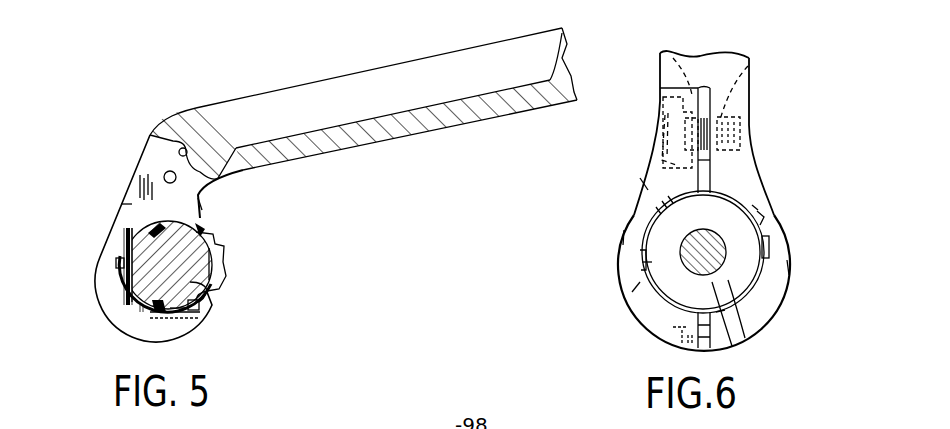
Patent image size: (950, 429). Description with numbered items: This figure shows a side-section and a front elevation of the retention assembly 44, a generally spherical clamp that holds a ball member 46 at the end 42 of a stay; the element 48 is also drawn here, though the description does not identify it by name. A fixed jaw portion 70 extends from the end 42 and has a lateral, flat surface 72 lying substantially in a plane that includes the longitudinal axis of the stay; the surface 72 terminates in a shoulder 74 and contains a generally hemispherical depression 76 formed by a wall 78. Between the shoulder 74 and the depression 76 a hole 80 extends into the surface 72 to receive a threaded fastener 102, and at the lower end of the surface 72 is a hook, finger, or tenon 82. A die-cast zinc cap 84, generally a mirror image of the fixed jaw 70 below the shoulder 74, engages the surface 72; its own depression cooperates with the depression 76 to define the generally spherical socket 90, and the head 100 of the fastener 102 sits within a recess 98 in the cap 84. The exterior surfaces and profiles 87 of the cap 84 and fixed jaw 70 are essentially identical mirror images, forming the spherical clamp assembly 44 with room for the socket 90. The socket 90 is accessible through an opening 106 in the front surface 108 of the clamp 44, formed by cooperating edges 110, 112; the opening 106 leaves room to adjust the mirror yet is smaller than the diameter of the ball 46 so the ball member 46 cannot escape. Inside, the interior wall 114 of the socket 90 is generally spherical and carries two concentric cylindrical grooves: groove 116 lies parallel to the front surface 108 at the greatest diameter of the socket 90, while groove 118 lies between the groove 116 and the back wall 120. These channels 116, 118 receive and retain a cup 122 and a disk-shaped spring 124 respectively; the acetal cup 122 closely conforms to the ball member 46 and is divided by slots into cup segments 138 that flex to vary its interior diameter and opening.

In FIG. 5, the end 42 is at (143, 131).
In FIG. 6, the retention assembly 44 is at (592, 271).
In FIG. 5, the ball member 46 is at (187, 238).
In FIG. 6, the ball member 46 is at (670, 282).
In FIG. 5, the ball stem 48 is at (214, 256).
In FIG. 6, the ball stem 48 is at (712, 272).
In FIG. 5, the fixed jaw portion 70 is at (122, 173).
In FIG. 6, the fixed jaw portion 70 is at (743, 177).
In FIG. 5, the lateral flat surface 72 is at (128, 204).
In FIG. 6, the lateral flat surface 72 is at (706, 162).
In FIG. 5, the shoulder 74 is at (190, 155).
In FIG. 6, the shoulder 74 is at (704, 88).
In FIG. 6, the hemispherical depression 76 is at (778, 214).
In FIG. 6, the wall 78 is at (752, 205).
In FIG. 6, the hole 80 is at (742, 118).
In FIG. 6, the tenon 82 is at (668, 334).
In FIG. 6, the cap 84 is at (653, 183).
In FIG. 6, the exterior surfaces and profiles 87 is at (790, 275).
In FIG. 5, the socket 90 is at (118, 245).
In FIG. 6, the recess 98 is at (653, 148).
In FIG. 6, the head 100 is at (665, 107).
In FIG. 6, the threaded fastener 102 is at (733, 83).
In FIG. 6, the opening 106 is at (666, 51).
In FIG. 6, the front surface 108 is at (612, 239).
In FIG. 6, the cooperating edge 110 is at (642, 283).
In FIG. 5, the cooperating edge 112 is at (201, 305).
In FIG. 6, the cooperating edge 112 is at (755, 336).
In FIG. 5, the interior wall 114 is at (221, 269).
In FIG. 5, the groove 116 is at (192, 327).
In FIG. 5, the groove 118 is at (118, 292).
In FIG. 5, the back wall 120 is at (114, 266).
In FIG. 5, the cup 122 is at (202, 204).
In FIG. 6, the cup 122 is at (782, 240).
In FIG. 5, the disk-shaped spring 124 is at (113, 282).
In FIG. 6, the cup segments 138 is at (642, 223).